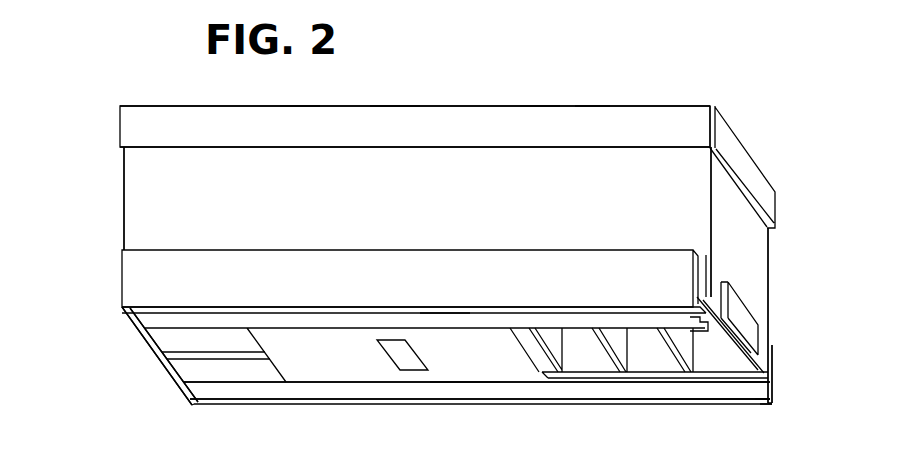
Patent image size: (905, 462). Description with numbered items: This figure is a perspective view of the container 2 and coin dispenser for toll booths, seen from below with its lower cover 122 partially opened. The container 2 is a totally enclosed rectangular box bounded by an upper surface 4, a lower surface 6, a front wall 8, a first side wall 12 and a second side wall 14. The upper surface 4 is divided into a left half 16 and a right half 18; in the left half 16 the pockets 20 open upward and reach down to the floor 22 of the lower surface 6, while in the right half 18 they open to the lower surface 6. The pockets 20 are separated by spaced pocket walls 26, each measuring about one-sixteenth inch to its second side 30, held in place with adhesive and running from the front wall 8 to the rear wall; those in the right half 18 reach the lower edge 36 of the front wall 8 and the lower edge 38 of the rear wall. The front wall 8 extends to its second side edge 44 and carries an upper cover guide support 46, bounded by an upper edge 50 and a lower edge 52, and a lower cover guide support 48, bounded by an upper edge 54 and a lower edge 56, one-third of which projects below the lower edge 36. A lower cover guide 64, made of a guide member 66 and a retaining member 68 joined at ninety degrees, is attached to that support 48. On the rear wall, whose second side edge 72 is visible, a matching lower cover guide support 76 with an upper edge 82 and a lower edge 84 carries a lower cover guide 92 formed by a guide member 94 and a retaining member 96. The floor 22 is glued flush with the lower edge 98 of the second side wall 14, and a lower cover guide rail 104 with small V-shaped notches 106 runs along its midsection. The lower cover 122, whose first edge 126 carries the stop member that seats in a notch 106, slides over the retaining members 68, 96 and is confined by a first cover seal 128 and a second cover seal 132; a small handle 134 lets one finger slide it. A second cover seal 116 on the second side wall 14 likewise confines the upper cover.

The container 2 is at (395, 89).
The upper surface 4 is at (592, 100).
The lower surface 6 is at (295, 405).
The front wall 8 is at (480, 213).
The first side wall 12 is at (126, 187).
The second side wall 14 is at (762, 242).
The left half 16 is at (300, 97).
The right half 18 is at (542, 97).
The pockets 20 is at (572, 333).
The floor 22 is at (163, 345).
The pocket walls 26 is at (592, 331).
The second side 30 is at (620, 348).
The lower edge of front wall 36 is at (706, 255).
The lower edge of rear wall 38 is at (625, 375).
The second side edge 44 is at (708, 175).
The upper cover guide support 46 is at (125, 127).
The lower cover guide support 48 is at (130, 302).
The upper edge 50 is at (226, 106).
The lower edge 52 is at (232, 148).
The upper edge 54 is at (322, 249).
The lower edge 56 is at (315, 309).
The lower cover guide 64 is at (441, 326).
The guide member 66 is at (700, 298).
The retaining member 68 is at (705, 331).
The second side edge 72 is at (780, 262).
The lower cover guide support 76 is at (680, 400).
The upper edge 82 is at (771, 345).
The lower edge 84 is at (560, 384).
The lower cover guide 92 is at (470, 392).
The guide member 94 is at (755, 383).
The retaining member 96 is at (762, 403).
The lower edge of second side wall 98 is at (773, 353).
The lower cover guide rail 104 is at (170, 370).
The V-shaped notches 106 is at (225, 366).
The second cover seal 116 is at (731, 146).
The lower cover 122 is at (465, 362).
The first edge 126 is at (260, 333).
The first cover seal 128 is at (183, 395).
The second cover seal 132 is at (748, 320).
The small handle 134 is at (390, 345).